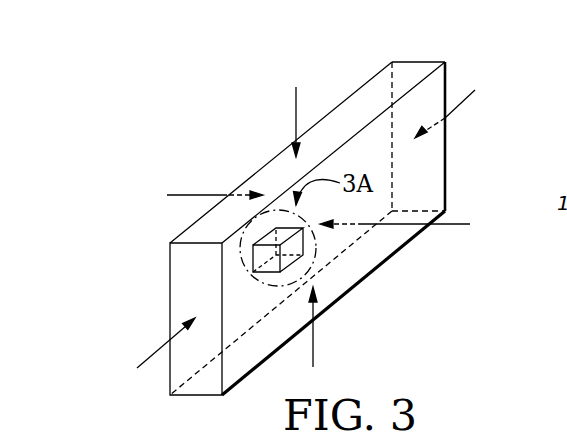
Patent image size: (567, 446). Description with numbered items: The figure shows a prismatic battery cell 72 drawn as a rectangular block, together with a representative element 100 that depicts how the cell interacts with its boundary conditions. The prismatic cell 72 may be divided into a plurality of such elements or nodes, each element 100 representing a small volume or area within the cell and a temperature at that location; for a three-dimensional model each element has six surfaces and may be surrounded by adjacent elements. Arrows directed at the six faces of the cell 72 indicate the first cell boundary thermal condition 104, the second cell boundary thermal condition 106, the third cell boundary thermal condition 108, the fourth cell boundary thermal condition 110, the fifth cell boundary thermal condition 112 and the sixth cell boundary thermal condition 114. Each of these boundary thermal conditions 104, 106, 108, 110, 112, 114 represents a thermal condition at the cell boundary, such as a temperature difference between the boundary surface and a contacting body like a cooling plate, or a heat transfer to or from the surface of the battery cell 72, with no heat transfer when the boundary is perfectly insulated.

The prismatic battery cell 72 is at (415, 62).
The element 100 is at (288, 228).
The cell boundary thermal condition BC1 104 is at (250, 91).
The cell boundary thermal condition BC2 106 is at (103, 338).
The cell boundary thermal condition BC3 108 is at (505, 112).
The cell boundary thermal condition BC4 110 is at (475, 242).
The cell boundary thermal condition BC5 112 is at (163, 183).
The cell boundary thermal condition BC6 114 is at (362, 358).